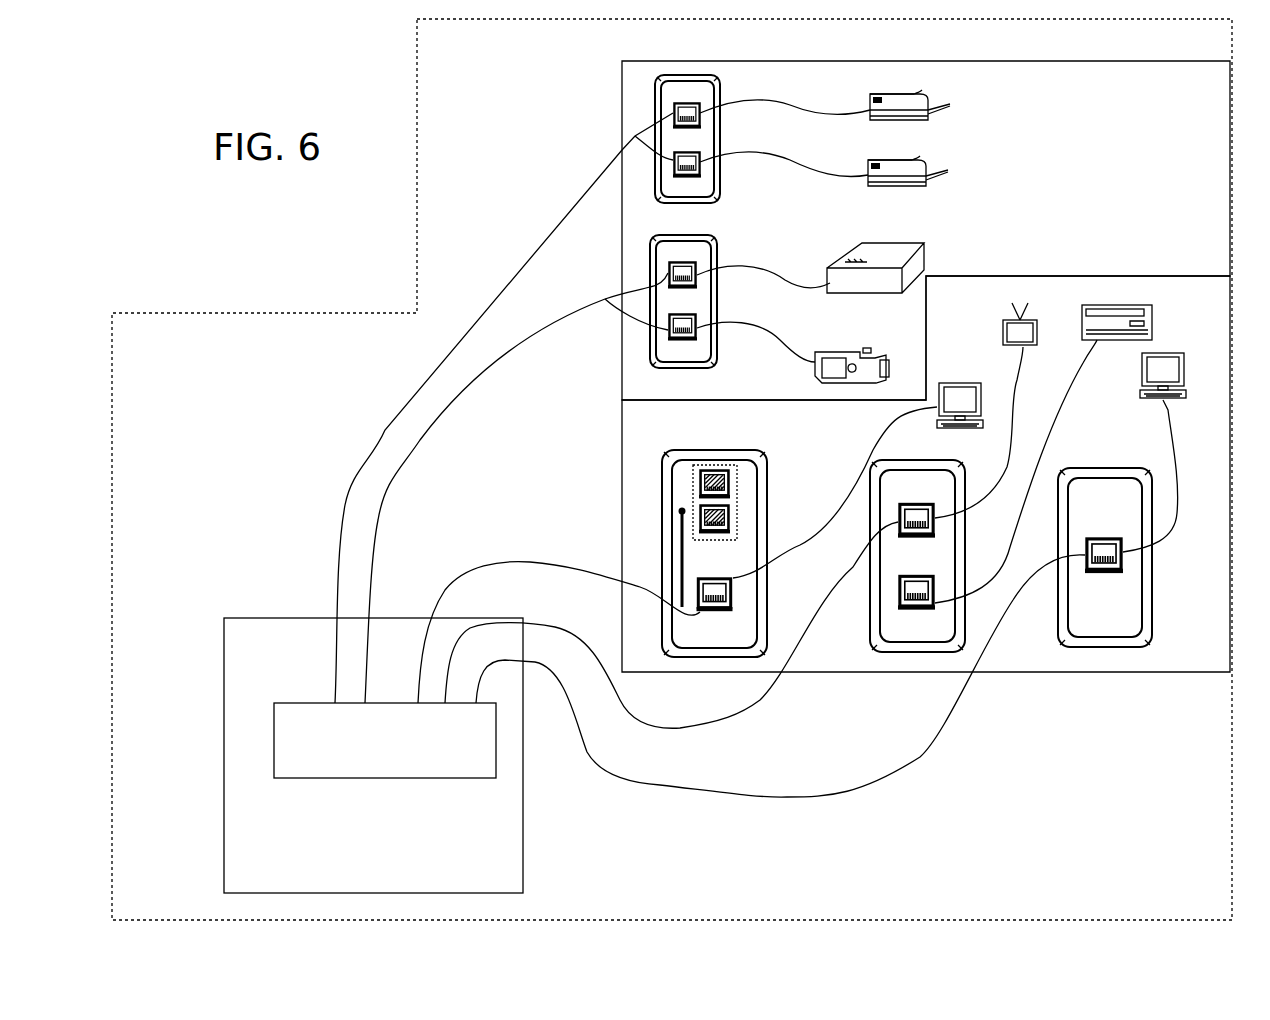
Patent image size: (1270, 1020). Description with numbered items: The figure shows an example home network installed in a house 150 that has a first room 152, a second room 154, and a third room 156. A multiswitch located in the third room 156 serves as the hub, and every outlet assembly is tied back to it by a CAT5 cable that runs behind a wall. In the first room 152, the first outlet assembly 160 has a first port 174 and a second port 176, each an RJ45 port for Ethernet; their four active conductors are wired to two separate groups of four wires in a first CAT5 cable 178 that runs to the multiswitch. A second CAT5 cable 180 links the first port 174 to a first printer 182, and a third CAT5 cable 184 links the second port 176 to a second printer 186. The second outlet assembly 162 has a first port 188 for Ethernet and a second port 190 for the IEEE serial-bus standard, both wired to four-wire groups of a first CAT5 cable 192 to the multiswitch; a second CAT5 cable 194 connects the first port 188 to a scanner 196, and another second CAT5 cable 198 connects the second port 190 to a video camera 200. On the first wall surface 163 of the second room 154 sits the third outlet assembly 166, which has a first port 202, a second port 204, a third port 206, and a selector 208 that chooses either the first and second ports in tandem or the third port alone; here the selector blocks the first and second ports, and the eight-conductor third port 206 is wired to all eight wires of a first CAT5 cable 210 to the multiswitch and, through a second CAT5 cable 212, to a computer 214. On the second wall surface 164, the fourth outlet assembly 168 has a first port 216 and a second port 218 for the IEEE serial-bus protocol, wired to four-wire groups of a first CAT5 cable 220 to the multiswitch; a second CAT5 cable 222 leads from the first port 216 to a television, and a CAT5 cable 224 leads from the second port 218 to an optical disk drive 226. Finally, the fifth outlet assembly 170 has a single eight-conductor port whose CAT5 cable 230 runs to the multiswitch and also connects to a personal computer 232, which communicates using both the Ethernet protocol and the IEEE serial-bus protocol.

The house 150 is at (305, 312).
The first room 152 is at (620, 85).
The second room 154 is at (620, 431).
The third room 156 is at (303, 616).
The first outlet assembly 160 is at (727, 85).
The second outlet assembly 162 is at (708, 232).
The first wall surface 163 is at (645, 445).
The second wall surface 164 is at (1183, 677).
The third outlet assembly 166 is at (760, 450).
The fourth outlet assembly 168 is at (905, 460).
The fifth outlet assembly 170 is at (1090, 468).
The first port 174 is at (690, 128).
The second port 176 is at (690, 178).
The first CAT5 cable 178 is at (505, 277).
The second CAT5 cable 180 is at (793, 113).
The first printer 182 is at (925, 115).
The third CAT5 cable 184 is at (800, 160).
The second printer 186 is at (922, 185).
The first port 188 is at (683, 262).
The second port 190 is at (680, 343).
The first CAT5 cable 192 is at (508, 360).
The second CAT5 cable 194 is at (783, 290).
The scanner 196 is at (877, 240).
The second CAT5 cable 198 is at (757, 343).
The video camera 200 is at (835, 352).
The first port 202 is at (733, 482).
The second port 204 is at (733, 515).
The third port 206 is at (733, 594).
The selector 208 is at (498, 497).
The first CAT5 cable 210 is at (520, 565).
The second CAT5 cable 212 is at (783, 565).
The computer 214 is at (960, 385).
The first port 216 is at (905, 543).
The second port 218 is at (905, 613).
The first CAT5 cable 220 is at (695, 728).
The second CAT5 cable 222 is at (1015, 420).
The CAT5 cable 224 is at (1068, 398).
The optical disk drive 226 is at (1120, 305).
The CAT5 cable 230 is at (1178, 465).
The personal computer 232 is at (1165, 352).